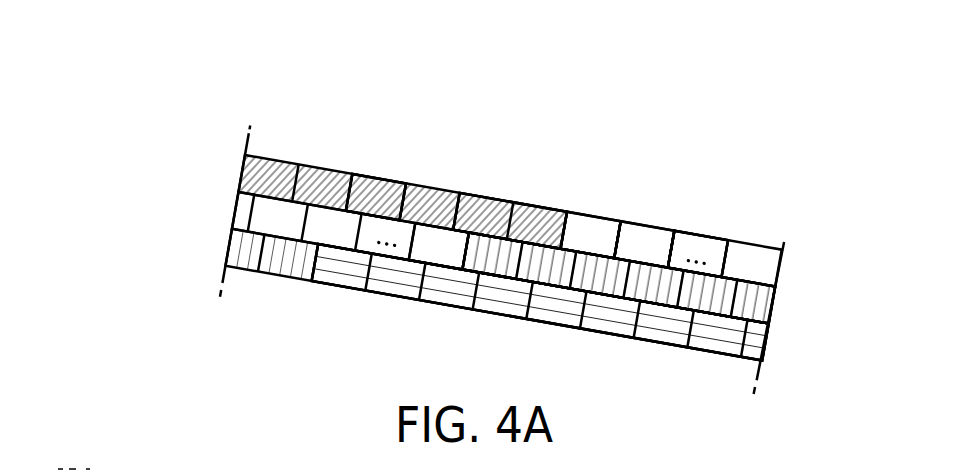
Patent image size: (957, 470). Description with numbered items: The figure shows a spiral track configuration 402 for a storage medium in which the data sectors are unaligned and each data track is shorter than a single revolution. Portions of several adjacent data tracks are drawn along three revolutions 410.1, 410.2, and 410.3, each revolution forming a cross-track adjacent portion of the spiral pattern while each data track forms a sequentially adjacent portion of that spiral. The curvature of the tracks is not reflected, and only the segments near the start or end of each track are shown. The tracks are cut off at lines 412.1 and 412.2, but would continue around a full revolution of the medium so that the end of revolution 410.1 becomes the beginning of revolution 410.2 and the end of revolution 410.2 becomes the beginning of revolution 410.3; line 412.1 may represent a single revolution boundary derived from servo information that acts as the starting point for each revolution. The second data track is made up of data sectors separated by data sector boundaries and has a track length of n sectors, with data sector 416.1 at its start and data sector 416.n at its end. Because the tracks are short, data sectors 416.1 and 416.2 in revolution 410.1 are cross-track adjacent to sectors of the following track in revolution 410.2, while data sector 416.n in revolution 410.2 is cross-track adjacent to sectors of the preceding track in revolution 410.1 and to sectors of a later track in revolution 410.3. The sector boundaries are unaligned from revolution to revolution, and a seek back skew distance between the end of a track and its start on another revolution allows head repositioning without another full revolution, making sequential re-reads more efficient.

The spiral track configuration 402 is at (128, 74).
The first revolution 410.1 is at (463, 204).
The second revolution 410.2 is at (457, 240).
The third revolution 410.3 is at (449, 276).
The single revolution boundary line 412.1 is at (249, 131).
The cutoff line 412.2 is at (784, 242).
The first data sector 416.1 is at (591, 235).
The second data sector 416.2 is at (644, 244).
The last data sector 416.n is at (439, 246).